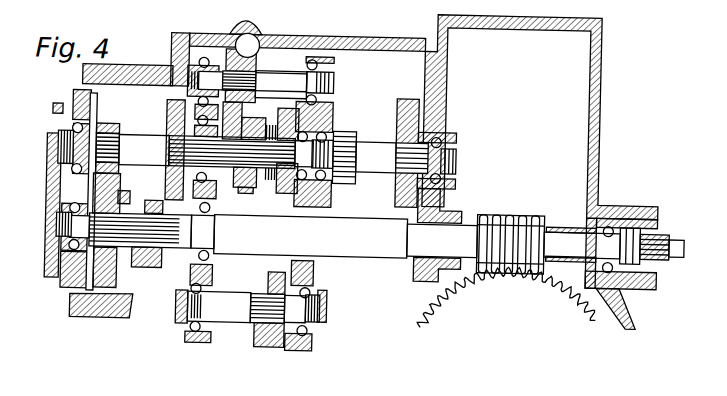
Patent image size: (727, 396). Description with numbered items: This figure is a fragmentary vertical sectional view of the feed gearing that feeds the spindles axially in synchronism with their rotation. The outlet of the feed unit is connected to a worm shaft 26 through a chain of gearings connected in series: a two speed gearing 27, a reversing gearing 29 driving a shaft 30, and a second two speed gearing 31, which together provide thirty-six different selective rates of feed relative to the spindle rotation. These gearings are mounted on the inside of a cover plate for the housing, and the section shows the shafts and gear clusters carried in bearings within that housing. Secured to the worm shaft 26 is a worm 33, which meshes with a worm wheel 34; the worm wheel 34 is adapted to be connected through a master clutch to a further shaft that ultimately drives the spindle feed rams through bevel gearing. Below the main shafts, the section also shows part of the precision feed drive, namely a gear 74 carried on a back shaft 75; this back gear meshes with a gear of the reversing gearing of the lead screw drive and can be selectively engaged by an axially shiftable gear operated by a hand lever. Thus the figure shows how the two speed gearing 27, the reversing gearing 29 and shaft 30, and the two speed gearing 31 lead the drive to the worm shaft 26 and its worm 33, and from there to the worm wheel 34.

The worm shaft 26 is at (376, 251).
The two speed gearing 27 is at (352, 134).
The reversing gearing 29 is at (253, 62).
The shaft 30 is at (134, 143).
The two speed gearing 31 is at (64, 209).
The worm 33 is at (531, 214).
The worm wheel 34 is at (426, 305).
The gear 74 is at (279, 349).
The back shaft 75 is at (242, 322).